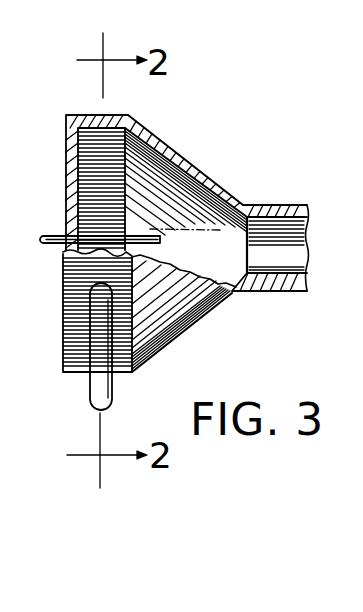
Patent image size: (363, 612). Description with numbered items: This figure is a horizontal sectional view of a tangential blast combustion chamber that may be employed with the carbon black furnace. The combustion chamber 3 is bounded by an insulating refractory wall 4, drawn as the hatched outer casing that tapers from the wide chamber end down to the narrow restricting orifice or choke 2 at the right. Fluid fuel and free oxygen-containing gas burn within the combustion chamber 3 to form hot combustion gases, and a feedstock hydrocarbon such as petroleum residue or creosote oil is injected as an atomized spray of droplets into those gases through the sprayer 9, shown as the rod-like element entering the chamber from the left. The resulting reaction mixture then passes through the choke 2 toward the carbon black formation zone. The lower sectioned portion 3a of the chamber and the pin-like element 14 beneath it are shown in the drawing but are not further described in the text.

The pipe 2 is at (270, 248).
The block 3 is at (101, 189).
The lower block section 3a is at (149, 310).
The conical wall 4 is at (191, 163).
The rod 9 is at (57, 235).
The pin 14 is at (95, 388).